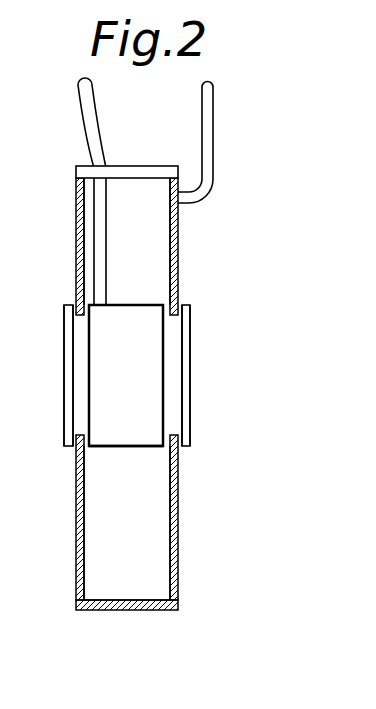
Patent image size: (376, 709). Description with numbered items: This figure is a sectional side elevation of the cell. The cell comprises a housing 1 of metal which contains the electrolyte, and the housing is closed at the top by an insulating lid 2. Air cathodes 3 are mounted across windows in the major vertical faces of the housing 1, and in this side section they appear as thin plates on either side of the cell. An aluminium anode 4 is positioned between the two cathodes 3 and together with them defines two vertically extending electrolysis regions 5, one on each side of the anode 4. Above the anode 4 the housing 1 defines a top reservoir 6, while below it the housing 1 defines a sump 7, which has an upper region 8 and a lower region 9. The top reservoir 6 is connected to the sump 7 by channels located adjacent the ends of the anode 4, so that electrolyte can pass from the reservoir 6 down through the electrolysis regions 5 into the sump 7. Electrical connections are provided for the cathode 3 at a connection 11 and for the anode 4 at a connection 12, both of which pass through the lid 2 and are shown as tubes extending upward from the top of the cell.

The housing 1 is at (178, 582).
The insulating lid 2 is at (135, 166).
The air cathode 3 is at (63, 398).
The aluminium anode 4 is at (133, 417).
The electrolysis region 5 is at (82, 342).
The top reservoir 6 is at (133, 262).
The sump 7 is at (132, 535).
The upper region 8 is at (117, 472).
The lower region 9 is at (100, 558).
The electrical connection 11 is at (214, 131).
The electrical connection 12 is at (95, 221).